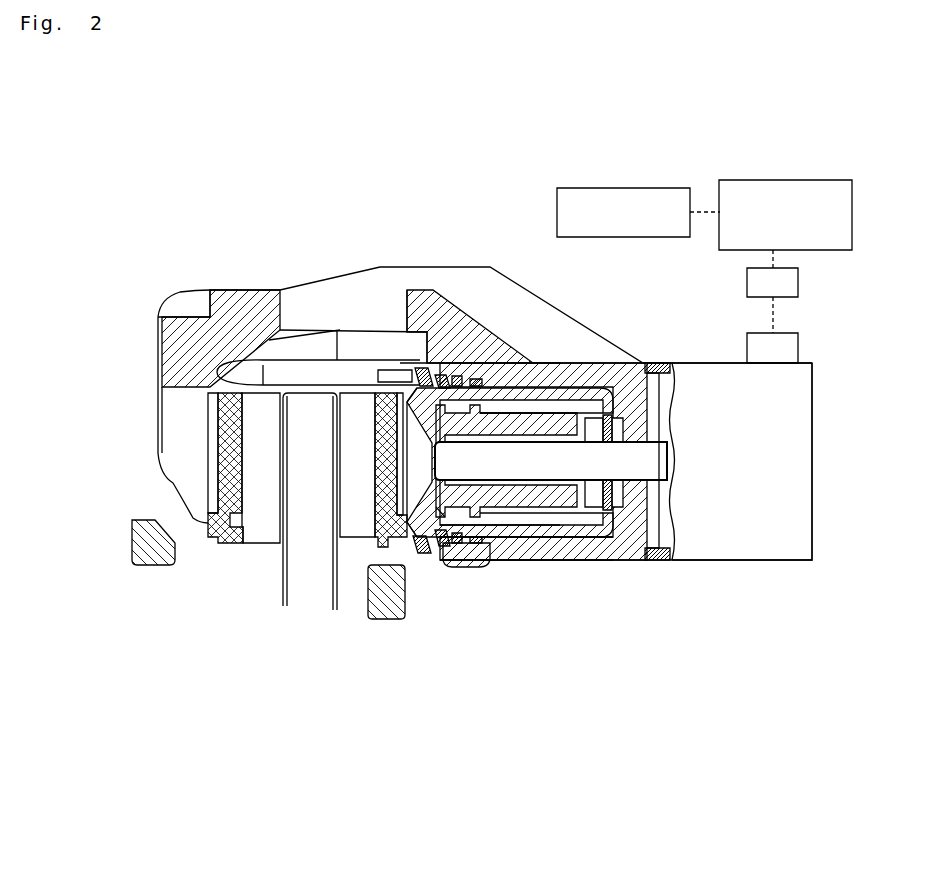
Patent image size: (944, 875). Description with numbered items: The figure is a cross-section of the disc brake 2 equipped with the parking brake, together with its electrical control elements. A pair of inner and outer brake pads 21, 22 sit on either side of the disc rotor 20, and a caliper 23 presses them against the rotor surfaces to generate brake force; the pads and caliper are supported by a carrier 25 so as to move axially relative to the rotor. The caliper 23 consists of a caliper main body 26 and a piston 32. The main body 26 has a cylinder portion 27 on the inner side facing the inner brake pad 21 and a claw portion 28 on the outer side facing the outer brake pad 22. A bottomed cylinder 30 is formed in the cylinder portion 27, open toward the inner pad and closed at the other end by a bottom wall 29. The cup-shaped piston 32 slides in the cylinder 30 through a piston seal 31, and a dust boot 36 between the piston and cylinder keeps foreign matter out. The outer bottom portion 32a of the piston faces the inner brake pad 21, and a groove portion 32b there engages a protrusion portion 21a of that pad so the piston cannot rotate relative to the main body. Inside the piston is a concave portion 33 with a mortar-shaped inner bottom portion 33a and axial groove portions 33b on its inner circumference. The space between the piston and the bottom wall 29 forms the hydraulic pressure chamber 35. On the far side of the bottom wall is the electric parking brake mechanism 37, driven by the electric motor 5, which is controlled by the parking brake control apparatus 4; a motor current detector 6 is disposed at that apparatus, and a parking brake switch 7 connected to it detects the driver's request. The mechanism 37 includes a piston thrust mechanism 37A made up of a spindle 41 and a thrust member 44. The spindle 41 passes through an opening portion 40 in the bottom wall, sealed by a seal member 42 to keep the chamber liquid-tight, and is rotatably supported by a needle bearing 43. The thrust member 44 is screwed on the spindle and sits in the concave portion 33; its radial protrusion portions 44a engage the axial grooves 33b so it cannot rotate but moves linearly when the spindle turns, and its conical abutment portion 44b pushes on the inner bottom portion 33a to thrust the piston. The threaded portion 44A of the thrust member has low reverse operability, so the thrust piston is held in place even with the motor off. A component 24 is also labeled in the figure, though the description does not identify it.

The disc brake equipped with the parking brake 2 is at (131, 312).
The parking brake control apparatus 4 is at (800, 181).
The electric motor 5 is at (800, 348).
The motor current detector 6 is at (800, 283).
The parking brake switch 7 is at (652, 189).
The disc rotor 20 is at (308, 594).
The inner brake pad 21 is at (352, 517).
The protrusion portion 21a is at (346, 537).
The outer brake pad 22 is at (259, 517).
The caliper 23 is at (193, 303).
The cylinder portion 24 is at (575, 410).
The carrier 25 is at (160, 566).
The caliper main body 26 is at (480, 276).
The cylinder portion 27 is at (470, 567).
The claw portion 28 is at (172, 425).
The bottom wall 29 is at (663, 520).
The cylinder 30 is at (600, 552).
The piston seal 31 is at (480, 548).
The piston 32 is at (510, 537).
The outer bottom portion 32a is at (393, 365).
The groove portion 32b is at (403, 540).
The concave portion 33 is at (520, 400).
The inner bottom portion 33a is at (418, 548).
The axial groove portions 33b is at (545, 410).
The hydraulic pressure chamber 35 is at (583, 548).
The dust boot 36 is at (436, 552).
The electric parking brake mechanism 37 is at (757, 520).
The piston thrust mechanism 37A is at (523, 543).
The opening portion 40 is at (663, 370).
The spindle 41 is at (547, 545).
The seal member 42 is at (668, 528).
The needle bearing 43 is at (633, 545).
The thrust member 44 is at (436, 365).
The protrusion portions 44a is at (489, 365).
The abutment portion 44b is at (441, 553).
The threaded portion 44A is at (530, 365).